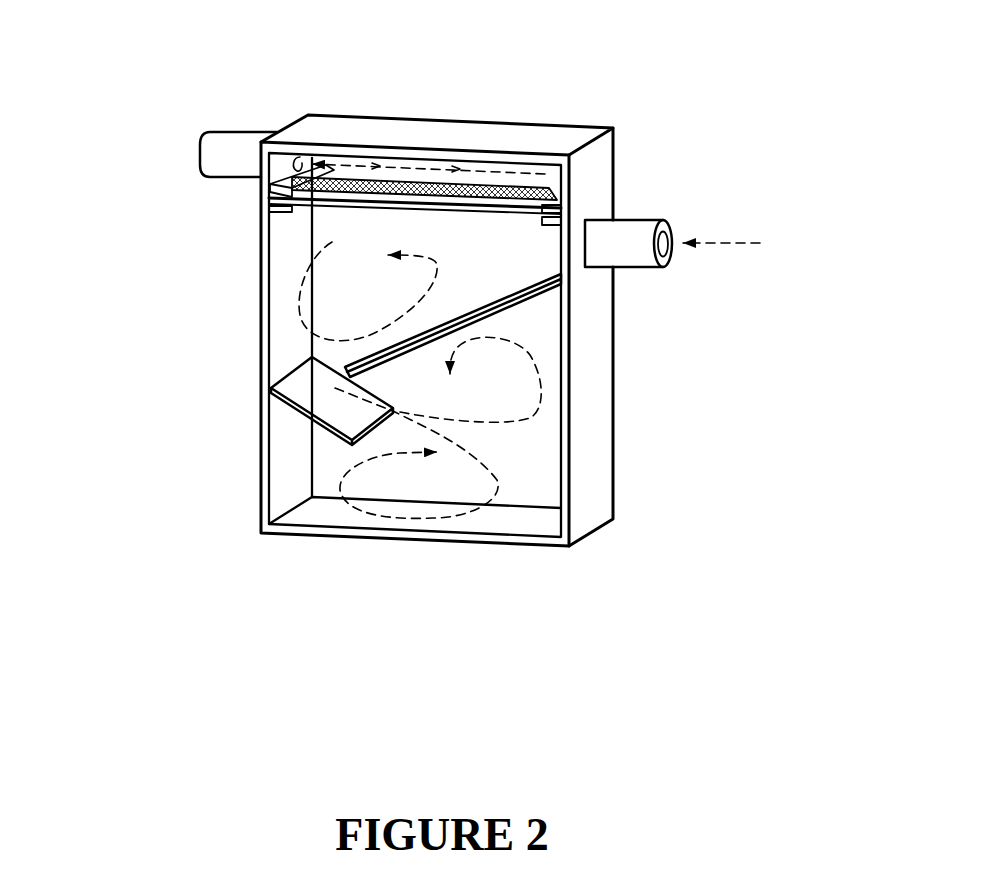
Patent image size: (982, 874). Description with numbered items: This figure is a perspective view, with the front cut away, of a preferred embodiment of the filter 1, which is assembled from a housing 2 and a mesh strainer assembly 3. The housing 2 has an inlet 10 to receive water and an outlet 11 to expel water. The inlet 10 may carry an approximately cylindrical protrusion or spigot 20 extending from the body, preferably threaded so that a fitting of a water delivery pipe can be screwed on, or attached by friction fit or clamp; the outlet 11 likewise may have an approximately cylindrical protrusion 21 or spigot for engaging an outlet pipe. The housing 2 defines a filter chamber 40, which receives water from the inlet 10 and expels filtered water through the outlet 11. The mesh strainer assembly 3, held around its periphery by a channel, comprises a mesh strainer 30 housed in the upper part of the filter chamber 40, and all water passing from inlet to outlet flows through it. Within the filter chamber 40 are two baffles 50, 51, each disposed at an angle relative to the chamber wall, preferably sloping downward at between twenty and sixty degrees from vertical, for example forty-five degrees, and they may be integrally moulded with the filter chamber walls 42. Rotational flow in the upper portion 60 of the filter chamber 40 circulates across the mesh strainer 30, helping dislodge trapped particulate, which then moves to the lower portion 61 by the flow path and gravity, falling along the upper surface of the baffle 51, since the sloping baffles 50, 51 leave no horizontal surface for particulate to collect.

The filter 1 is at (697, 502).
The housing 2 is at (257, 463).
The mesh strainer assembly 3 is at (352, 168).
The inlet 10 is at (696, 204).
The protrusion or spigot 20 is at (630, 230).
The outlet 11 is at (213, 152).
The protrusion or spigot 21 is at (166, 137).
The mesh strainer 30 is at (480, 185).
The filter chamber 40 is at (510, 455).
The filter chamber walls 42 is at (283, 310).
The baffle 50 is at (517, 308).
The baffle 51 is at (318, 384).
The upper portion 60 is at (355, 270).
The lower portion 61 is at (435, 458).